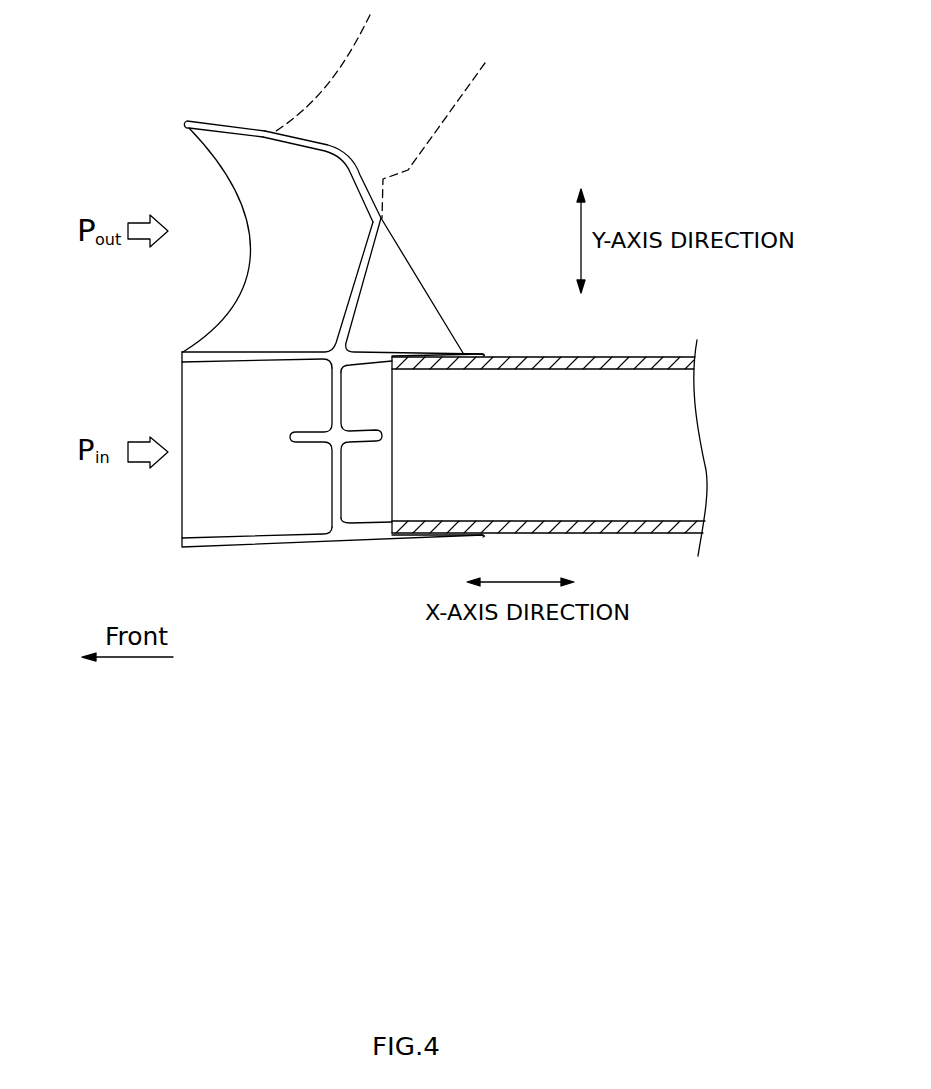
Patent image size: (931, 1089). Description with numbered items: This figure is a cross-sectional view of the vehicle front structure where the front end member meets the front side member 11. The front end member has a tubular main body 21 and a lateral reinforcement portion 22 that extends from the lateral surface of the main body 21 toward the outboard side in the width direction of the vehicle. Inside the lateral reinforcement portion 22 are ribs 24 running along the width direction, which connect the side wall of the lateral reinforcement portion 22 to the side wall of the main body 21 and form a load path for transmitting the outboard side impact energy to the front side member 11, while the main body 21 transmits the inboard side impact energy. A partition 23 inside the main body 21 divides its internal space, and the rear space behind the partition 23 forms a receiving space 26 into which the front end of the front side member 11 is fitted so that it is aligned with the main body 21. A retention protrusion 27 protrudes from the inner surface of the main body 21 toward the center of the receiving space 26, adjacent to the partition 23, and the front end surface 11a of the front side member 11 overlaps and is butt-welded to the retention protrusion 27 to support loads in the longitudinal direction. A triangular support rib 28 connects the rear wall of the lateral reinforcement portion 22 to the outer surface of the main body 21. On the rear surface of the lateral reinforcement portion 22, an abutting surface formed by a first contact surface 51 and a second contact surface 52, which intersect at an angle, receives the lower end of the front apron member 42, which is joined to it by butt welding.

The front side member 11 is at (614, 534).
The front end surface 11a is at (418, 297).
The main body 21 is at (260, 452).
The lateral reinforcement portion 22 is at (295, 185).
The partition 23 is at (328, 490).
The rib 24 is at (243, 168).
The receiving space 26 is at (358, 492).
The retention protrusion 27 is at (410, 358).
The support rib 28 is at (390, 360).
The front apron member 42 is at (460, 100).
The first contact surface 51 is at (357, 165).
The second contact surface 52 is at (303, 137).